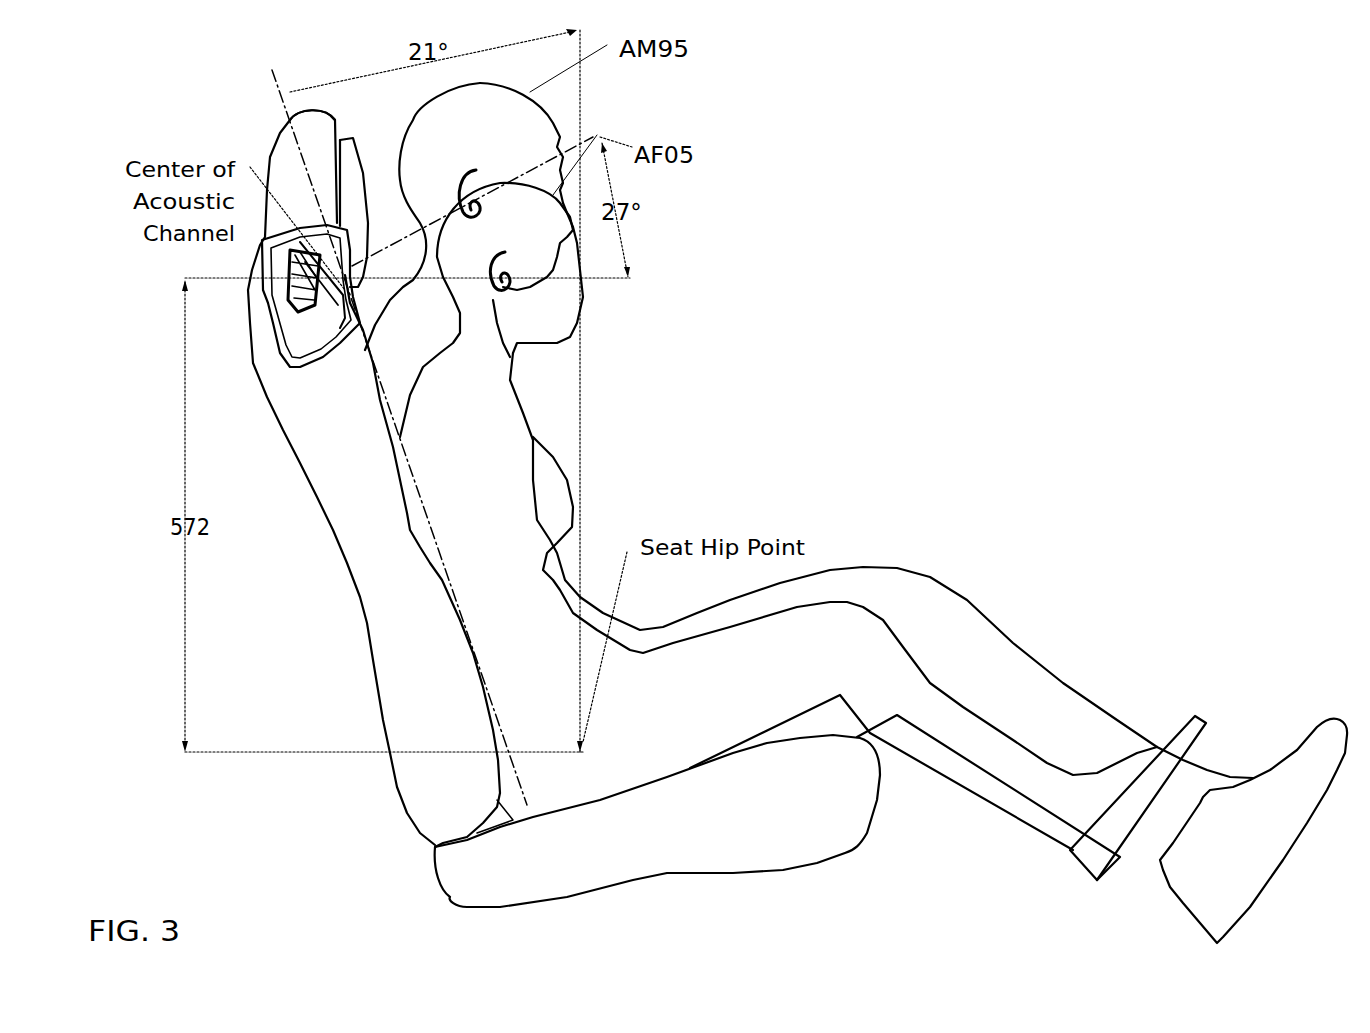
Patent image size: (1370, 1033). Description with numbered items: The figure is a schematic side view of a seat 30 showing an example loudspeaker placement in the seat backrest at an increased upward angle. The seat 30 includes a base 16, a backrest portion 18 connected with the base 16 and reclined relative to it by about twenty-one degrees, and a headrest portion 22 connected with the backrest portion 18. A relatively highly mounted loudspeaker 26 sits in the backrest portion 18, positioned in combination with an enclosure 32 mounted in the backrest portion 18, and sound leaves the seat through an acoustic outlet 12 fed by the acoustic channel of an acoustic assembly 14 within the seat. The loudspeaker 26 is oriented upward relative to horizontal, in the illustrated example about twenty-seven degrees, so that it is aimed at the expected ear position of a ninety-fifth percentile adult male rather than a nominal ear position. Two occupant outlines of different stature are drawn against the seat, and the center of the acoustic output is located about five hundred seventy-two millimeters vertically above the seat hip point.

The acoustic outlet 12 is at (351, 340).
The acoustic assembly 14 is at (240, 347).
The base 16 is at (405, 879).
The backrest portion 18 is at (337, 611).
The headrest portion 22 is at (368, 128).
The loudspeaker 26 is at (307, 327).
The seat 30 is at (174, 121).
The enclosure 32 is at (291, 369).